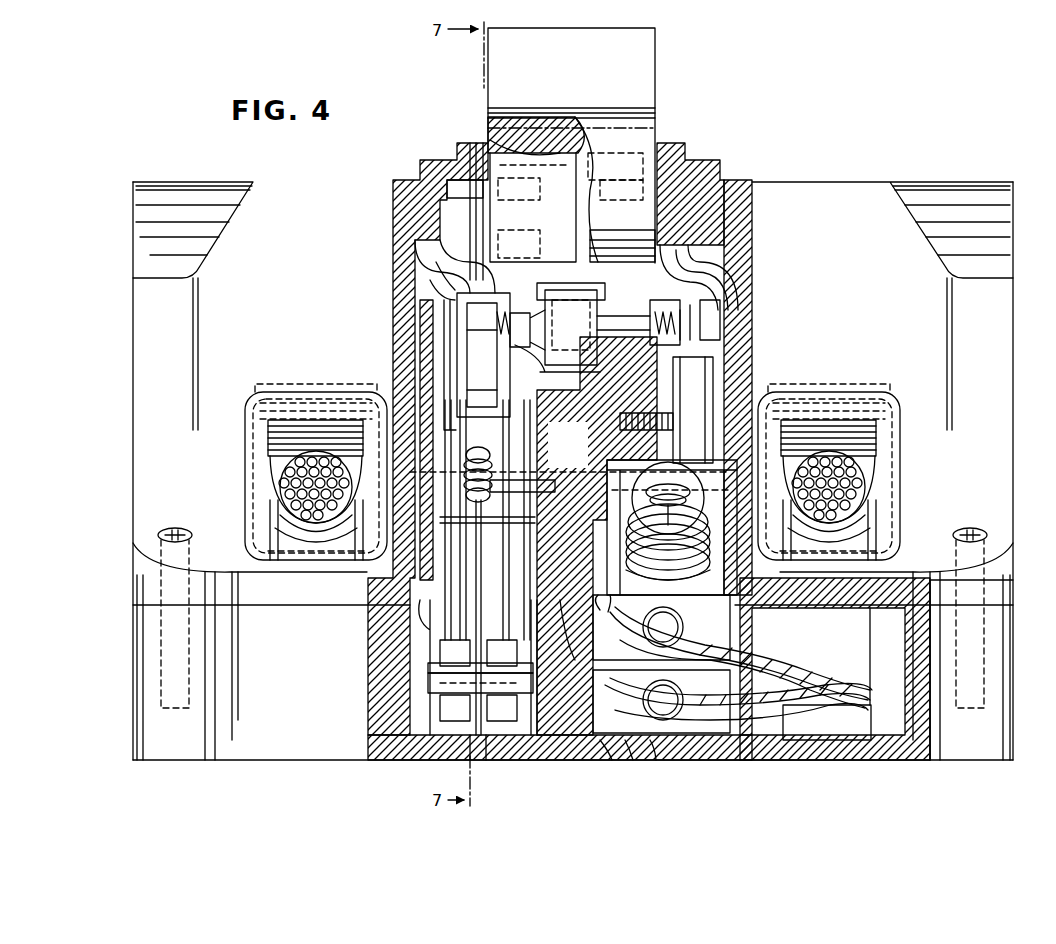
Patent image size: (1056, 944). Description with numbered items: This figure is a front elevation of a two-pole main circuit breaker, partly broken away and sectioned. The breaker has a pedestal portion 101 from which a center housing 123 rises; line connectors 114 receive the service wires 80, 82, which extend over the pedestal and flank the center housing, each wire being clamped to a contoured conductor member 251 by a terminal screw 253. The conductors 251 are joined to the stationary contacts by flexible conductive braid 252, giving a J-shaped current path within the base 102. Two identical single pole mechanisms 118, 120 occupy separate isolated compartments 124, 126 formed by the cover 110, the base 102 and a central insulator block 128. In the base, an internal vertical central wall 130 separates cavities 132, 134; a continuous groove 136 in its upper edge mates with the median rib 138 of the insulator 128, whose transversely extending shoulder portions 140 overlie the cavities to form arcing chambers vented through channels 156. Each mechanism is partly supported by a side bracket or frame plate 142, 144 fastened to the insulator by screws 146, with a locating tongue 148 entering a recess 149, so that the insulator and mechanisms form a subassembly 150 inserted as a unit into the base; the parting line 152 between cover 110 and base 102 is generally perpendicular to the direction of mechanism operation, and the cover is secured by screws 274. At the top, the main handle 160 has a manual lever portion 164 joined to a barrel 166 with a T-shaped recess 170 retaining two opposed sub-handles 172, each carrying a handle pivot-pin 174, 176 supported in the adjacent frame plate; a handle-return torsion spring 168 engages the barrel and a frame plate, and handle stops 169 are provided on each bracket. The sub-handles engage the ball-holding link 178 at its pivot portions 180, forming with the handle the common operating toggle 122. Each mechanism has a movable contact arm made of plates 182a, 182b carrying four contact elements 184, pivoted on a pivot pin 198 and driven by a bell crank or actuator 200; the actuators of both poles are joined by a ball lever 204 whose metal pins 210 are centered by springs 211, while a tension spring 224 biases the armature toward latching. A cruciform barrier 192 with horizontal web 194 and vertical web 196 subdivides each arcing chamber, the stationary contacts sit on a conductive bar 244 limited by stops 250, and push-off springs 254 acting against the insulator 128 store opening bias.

The wire 80 is at (855, 488).
The wire 82 is at (292, 492).
The pedestal portion 101 is at (300, 560).
The base 102 is at (135, 700).
The cover 110 is at (140, 277).
The line connector 114 is at (252, 425).
The circuit breaker mechanism 118 is at (445, 312).
The circuit breaker mechanism 120 is at (755, 305).
The operating toggle 122 is at (740, 258).
The center housing 123 is at (735, 180).
The compartment 124 is at (485, 580).
The compartment 126 is at (625, 570).
The central insulator block 128 is at (580, 444).
The internal vertical central wall 130 is at (600, 745).
The cavity 132 is at (400, 625).
The cavity 134 is at (730, 655).
The groove 136 is at (548, 745).
The median projection or rib 138 is at (578, 662).
The shoulder portion 140 is at (600, 600).
The side bracket or frame plate 142 is at (456, 302).
The side bracket or frame plate 144 is at (725, 295).
The screw 146 is at (683, 420).
The locating tongue 148 is at (410, 705).
The recess 149 is at (410, 740).
The subassembly 150 is at (752, 240).
The parting line 152 is at (985, 610).
The channel 156 is at (700, 745).
The main handle 160 is at (660, 44).
The manual lever portion 164 is at (655, 64).
The cylindrical barrel or body portion 166 is at (640, 122).
The handle-return torsion spring 168 is at (490, 175).
The handle stop 169 is at (535, 232).
The T-shaped recess 170 is at (555, 148).
The sub-handle 172 is at (648, 123).
The handle pivot-pin 174 is at (452, 180).
The handle pivot-pin 176 is at (700, 152).
The ball-holding link 178 is at (590, 318).
The pivot portion 180 is at (594, 262).
The plate 182a is at (500, 528).
The plate 182b is at (447, 545).
The contact element 184 is at (478, 680).
The cruciform barrier 192 is at (420, 690).
The horizontal web 194 is at (432, 667).
The vertical web 196 is at (465, 745).
The pivot pin 198 is at (495, 496).
The bell crank or actuator 200 is at (440, 283).
The ball lever 204 is at (548, 360).
The metal pin 210 is at (468, 333).
The spring 211 is at (446, 274).
The tension spring 224 is at (535, 480).
The conductive bar 244 is at (632, 748).
The stop 250 is at (725, 665).
The contoured conductor member 251 is at (835, 732).
The flexible conductive braid 252 is at (728, 605).
The terminal screw 253 is at (290, 383).
The push-off spring 254 is at (705, 480).
The screw 274 is at (158, 533).